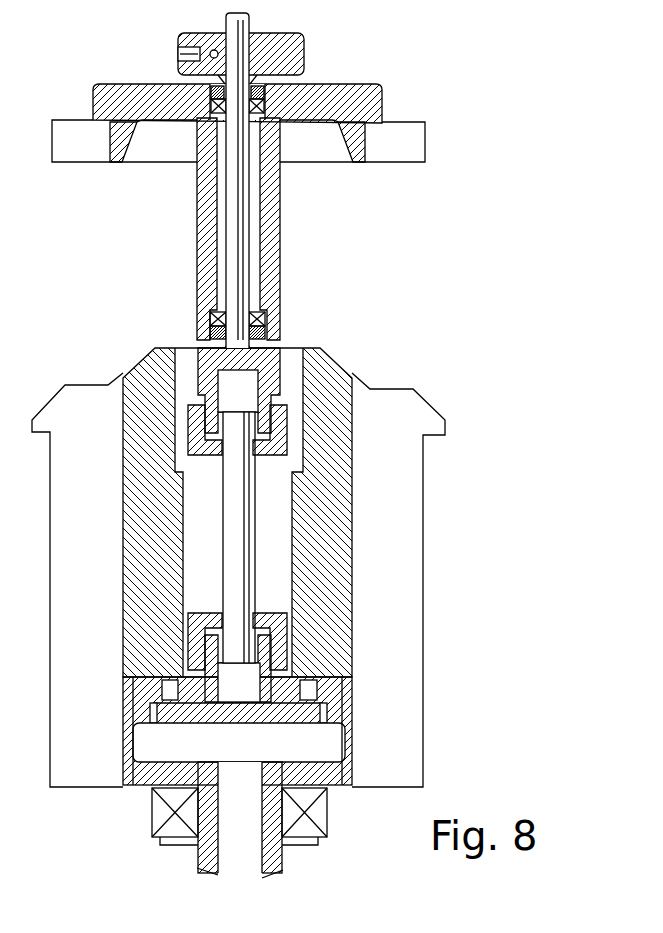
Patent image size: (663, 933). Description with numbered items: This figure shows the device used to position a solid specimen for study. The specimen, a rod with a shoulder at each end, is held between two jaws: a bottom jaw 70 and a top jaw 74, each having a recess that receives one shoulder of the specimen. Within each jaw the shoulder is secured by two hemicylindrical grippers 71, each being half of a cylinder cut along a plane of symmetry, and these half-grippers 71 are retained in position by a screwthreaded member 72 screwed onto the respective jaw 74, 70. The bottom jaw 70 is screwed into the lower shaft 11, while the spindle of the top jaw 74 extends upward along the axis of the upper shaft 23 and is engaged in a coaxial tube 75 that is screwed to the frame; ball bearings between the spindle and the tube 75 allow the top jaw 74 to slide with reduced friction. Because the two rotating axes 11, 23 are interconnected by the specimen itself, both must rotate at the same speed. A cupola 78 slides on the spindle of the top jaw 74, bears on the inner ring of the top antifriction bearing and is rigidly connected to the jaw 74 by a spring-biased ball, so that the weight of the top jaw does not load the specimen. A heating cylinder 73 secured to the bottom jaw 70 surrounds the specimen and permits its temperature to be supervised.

The shaft 11 is at (270, 860).
The shaft 23 is at (238, 263).
The bottom jaw 70 is at (257, 722).
The hemicylindrical grippers 71 is at (203, 448).
The screwthreaded members 72 is at (278, 450).
The heating cylinder 73 is at (333, 576).
The top jaw 74 is at (283, 357).
The coaxial tube 75 is at (276, 208).
The cupola 78 is at (293, 58).